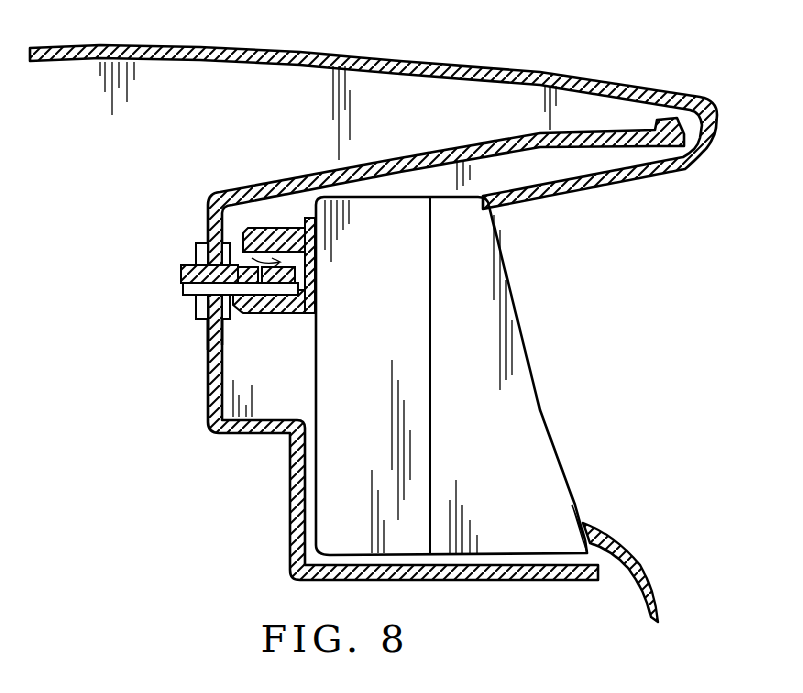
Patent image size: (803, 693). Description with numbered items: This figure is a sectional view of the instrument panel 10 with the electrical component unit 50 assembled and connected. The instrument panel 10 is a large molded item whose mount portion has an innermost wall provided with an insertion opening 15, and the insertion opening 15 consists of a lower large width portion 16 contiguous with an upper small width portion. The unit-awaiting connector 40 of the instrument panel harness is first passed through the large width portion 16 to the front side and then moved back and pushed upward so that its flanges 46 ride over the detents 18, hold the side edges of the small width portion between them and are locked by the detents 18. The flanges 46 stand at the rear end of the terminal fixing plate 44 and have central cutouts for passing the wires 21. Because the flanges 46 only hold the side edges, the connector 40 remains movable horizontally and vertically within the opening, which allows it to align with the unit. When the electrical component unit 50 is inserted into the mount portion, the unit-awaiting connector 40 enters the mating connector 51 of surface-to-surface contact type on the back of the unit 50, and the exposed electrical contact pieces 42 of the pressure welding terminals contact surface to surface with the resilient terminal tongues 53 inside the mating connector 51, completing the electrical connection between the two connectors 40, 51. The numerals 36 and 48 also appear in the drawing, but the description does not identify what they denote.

The instrument panel 10 is at (553, 72).
The insertion opening 15 is at (212, 327).
The large width portion 16 is at (212, 377).
The detent 18 is at (222, 327).
The wire 21 is at (183, 288).
The clip 36 is at (197, 248).
The unit-awaiting connector 40 is at (168, 243).
The electrical contact piece 42 is at (288, 250).
The terminal fixing plate 44 is at (180, 270).
The flange 46 is at (240, 232).
The lower bracket arm 48 is at (273, 317).
The electrical component unit 50 is at (530, 367).
The mating connector 51 is at (296, 315).
The resilient terminal tongue 53 is at (260, 230).